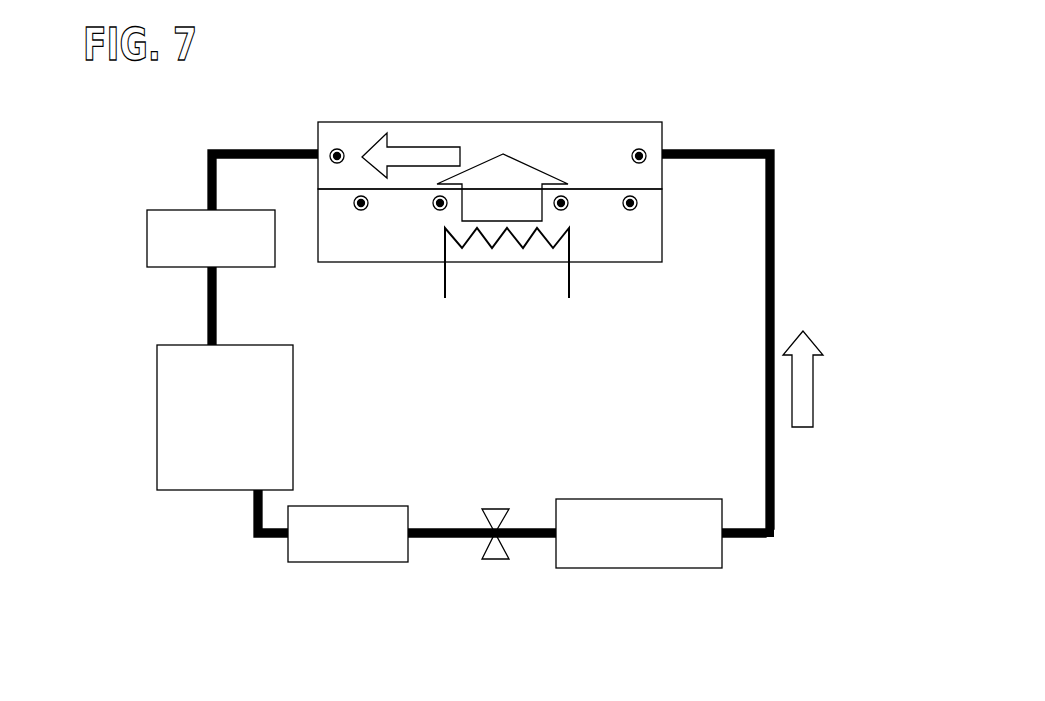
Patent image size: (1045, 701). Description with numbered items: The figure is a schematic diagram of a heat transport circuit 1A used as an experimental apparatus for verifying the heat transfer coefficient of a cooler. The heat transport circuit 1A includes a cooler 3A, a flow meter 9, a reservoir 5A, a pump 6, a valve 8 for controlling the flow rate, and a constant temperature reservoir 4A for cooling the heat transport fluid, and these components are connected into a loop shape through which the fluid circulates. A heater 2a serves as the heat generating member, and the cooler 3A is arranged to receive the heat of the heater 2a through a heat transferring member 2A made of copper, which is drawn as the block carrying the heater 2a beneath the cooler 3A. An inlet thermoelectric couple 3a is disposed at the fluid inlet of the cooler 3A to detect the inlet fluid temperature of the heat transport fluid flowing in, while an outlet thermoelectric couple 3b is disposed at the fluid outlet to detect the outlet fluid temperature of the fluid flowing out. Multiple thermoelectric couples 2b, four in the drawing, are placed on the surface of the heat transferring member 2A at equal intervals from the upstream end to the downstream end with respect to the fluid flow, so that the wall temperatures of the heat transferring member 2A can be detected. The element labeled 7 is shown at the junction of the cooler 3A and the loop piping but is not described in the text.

The heat transport circuit 1A is at (777, 203).
The heat transferring member 2A is at (662, 232).
The heater 2a is at (570, 283).
The thermoelectric couples 2b is at (640, 204).
The cooler 3A is at (662, 132).
The inlet thermoelectric couple 3a is at (639, 149).
The outlet thermoelectric couple 3b is at (337, 149).
The constant temperature reservoir 4A is at (635, 568).
The reservoir 5A is at (157, 435).
The pump 6 is at (348, 562).
The pipe connection 7 is at (664, 148).
The valve 8 is at (495, 559).
The flow meter 9 is at (147, 234).